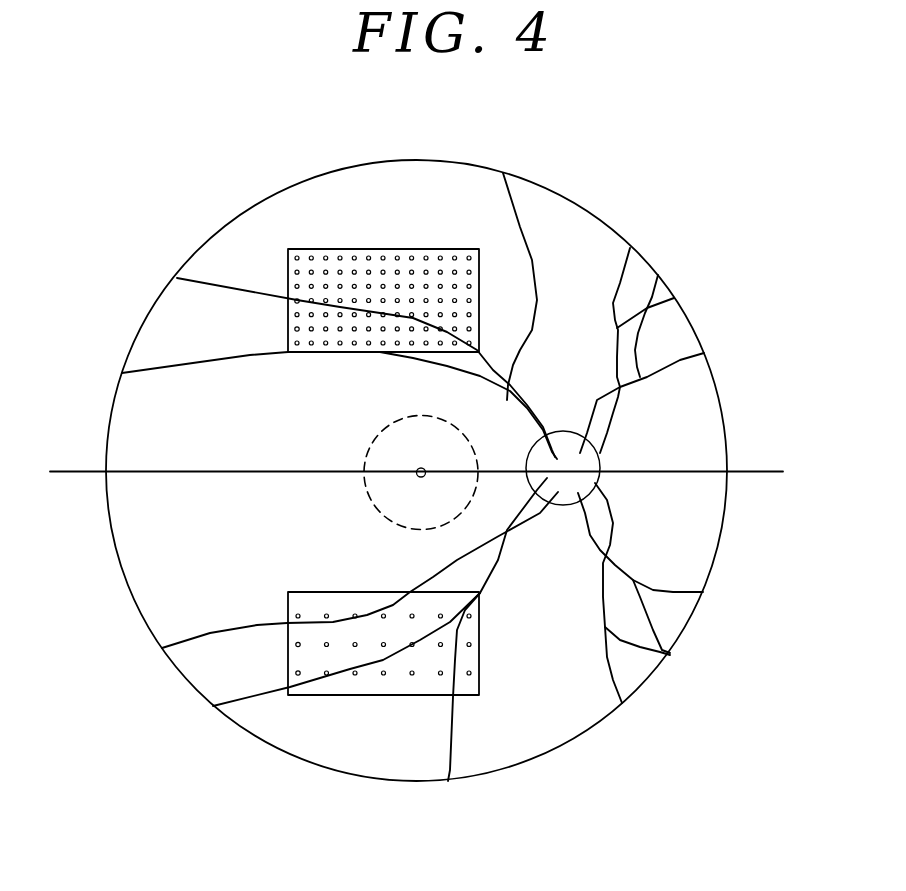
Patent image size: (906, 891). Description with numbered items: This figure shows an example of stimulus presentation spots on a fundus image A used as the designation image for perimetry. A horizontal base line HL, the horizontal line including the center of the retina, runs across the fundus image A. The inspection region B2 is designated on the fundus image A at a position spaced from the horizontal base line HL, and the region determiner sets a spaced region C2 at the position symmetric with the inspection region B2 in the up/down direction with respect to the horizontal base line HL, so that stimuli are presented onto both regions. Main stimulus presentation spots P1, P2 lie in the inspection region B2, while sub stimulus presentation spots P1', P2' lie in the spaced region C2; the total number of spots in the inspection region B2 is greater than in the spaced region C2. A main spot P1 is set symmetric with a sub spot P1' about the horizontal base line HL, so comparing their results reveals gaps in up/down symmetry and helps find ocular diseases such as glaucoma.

The fundus image A is at (220, 230).
The horizontal base line HL is at (85, 471).
The inspection region B2 is at (288, 247).
The spaced region C2 is at (340, 696).
The main stimulus presentation spot P1 is at (189, 317).
The main stimulus presentation spot P2 is at (188, 347).
The sub stimulus presentation spot P1' is at (206, 664).
The sub stimulus presentation spot P2' is at (211, 706).